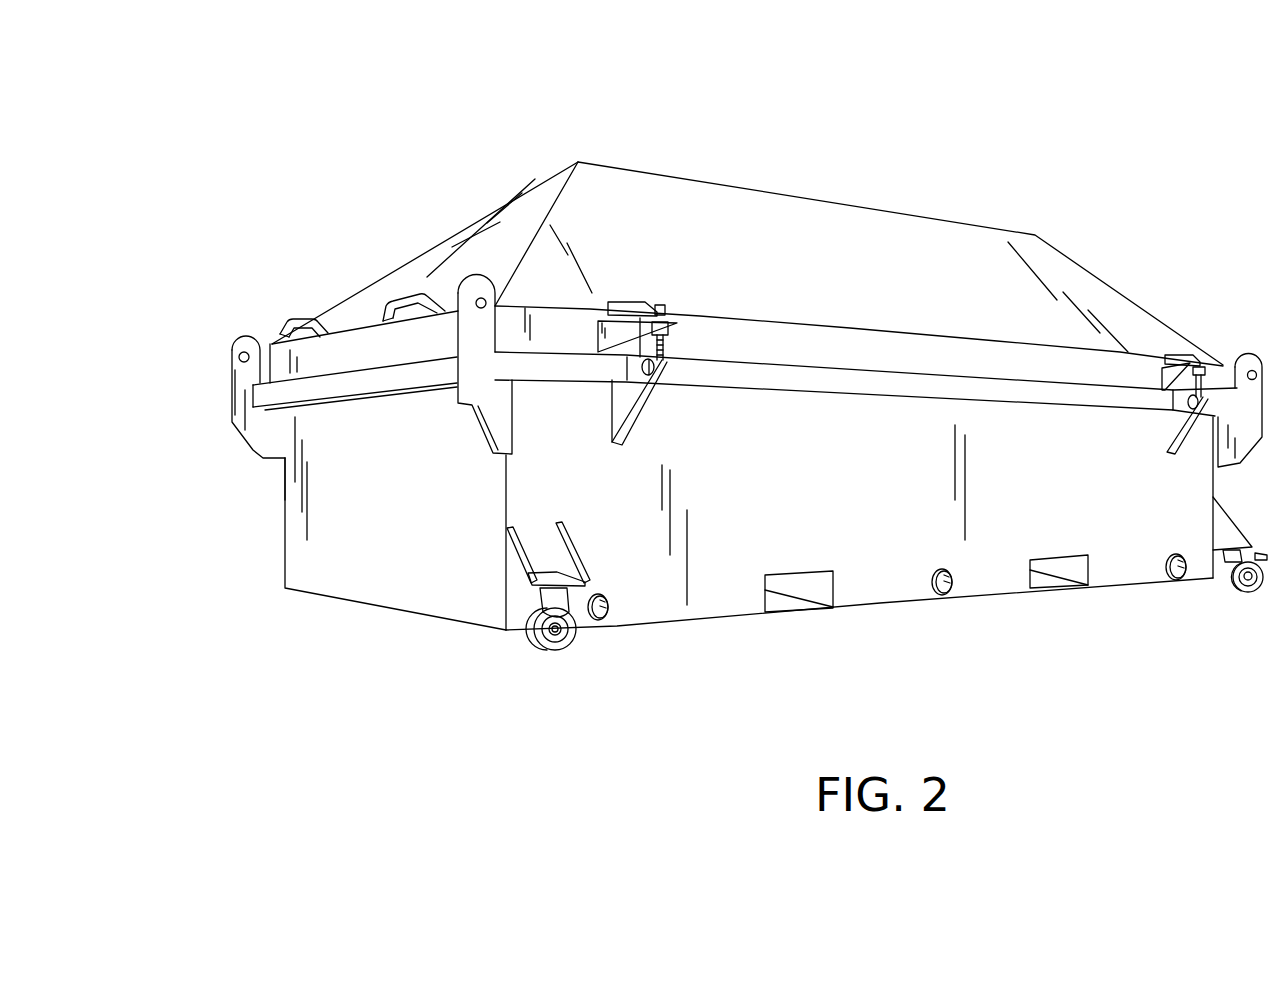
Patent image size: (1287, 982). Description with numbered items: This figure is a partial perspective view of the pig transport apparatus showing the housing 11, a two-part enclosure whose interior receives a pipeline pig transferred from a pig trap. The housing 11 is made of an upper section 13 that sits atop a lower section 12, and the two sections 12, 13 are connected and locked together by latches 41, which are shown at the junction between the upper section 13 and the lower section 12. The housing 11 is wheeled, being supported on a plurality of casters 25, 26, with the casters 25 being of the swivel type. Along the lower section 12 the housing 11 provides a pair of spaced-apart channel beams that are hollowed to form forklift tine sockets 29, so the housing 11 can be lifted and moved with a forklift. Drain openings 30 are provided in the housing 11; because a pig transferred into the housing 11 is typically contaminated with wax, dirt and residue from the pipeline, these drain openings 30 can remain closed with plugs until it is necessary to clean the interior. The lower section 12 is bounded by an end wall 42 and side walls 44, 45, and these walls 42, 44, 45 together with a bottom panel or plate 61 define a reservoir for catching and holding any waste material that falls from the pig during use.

The housing 11 is at (890, 203).
The lower section 12 is at (913, 490).
The upper section 13 is at (868, 274).
The caster 25 is at (1242, 592).
The caster 26 is at (547, 648).
The forklift tine socket 29 is at (807, 585).
The drain opening 30 is at (607, 625).
The latch 41 is at (673, 345).
The end wall 42 is at (395, 532).
The side wall 44 is at (662, 608).
The side wall 45 is at (288, 499).
The bottom panel or plate 61 is at (963, 600).